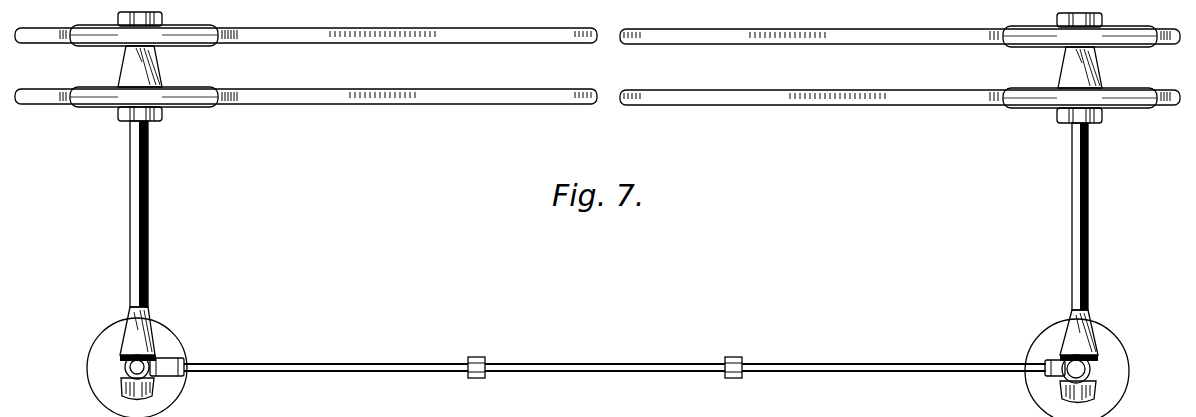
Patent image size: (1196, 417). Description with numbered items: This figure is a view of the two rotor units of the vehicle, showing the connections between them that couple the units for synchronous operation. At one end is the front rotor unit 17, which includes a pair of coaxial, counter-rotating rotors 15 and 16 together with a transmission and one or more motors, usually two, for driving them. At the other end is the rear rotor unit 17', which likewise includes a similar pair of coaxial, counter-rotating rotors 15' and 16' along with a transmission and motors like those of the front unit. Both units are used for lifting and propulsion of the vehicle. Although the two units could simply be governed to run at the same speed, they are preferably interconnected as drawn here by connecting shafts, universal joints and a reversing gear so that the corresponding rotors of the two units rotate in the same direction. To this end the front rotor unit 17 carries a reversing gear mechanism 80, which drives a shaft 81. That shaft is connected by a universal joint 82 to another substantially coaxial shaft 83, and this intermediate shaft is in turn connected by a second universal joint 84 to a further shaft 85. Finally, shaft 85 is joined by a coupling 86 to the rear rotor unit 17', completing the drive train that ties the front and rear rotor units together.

The rotor 15 is at (306, 23).
The rotor 16 is at (306, 83).
The rotor 15' is at (900, 23).
The rotor 16' is at (900, 83).
The front rotor unit 17 is at (114, 159).
The rear rotor unit 17' is at (1099, 161).
The reversing gear mechanism 80 is at (172, 355).
The shaft 81 is at (392, 344).
The universal joint 82 is at (475, 357).
The shaft 83 is at (600, 363).
The universal joint 84 is at (737, 357).
The shaft 85 is at (900, 347).
The coupling 86 is at (1060, 362).